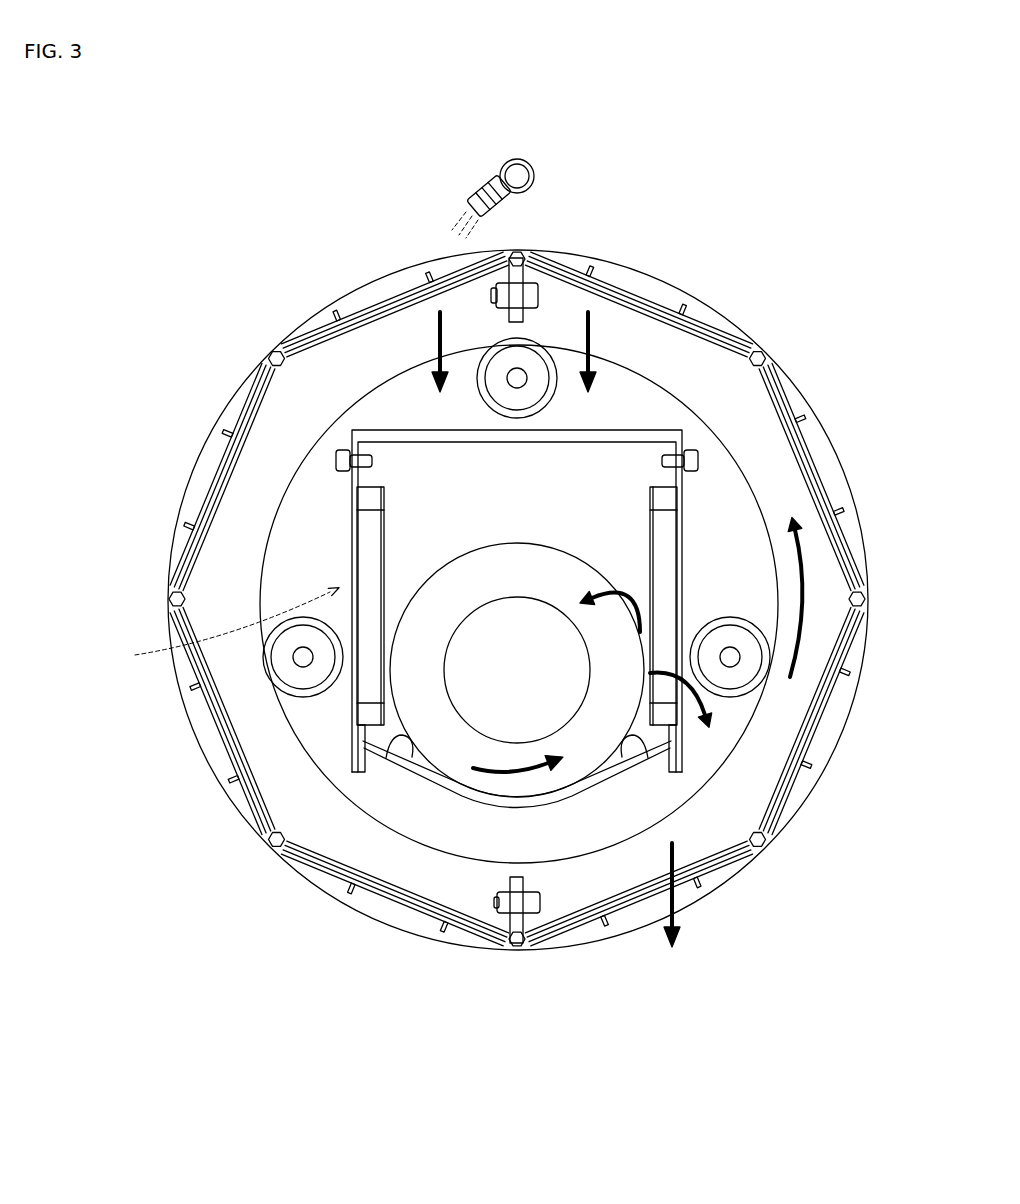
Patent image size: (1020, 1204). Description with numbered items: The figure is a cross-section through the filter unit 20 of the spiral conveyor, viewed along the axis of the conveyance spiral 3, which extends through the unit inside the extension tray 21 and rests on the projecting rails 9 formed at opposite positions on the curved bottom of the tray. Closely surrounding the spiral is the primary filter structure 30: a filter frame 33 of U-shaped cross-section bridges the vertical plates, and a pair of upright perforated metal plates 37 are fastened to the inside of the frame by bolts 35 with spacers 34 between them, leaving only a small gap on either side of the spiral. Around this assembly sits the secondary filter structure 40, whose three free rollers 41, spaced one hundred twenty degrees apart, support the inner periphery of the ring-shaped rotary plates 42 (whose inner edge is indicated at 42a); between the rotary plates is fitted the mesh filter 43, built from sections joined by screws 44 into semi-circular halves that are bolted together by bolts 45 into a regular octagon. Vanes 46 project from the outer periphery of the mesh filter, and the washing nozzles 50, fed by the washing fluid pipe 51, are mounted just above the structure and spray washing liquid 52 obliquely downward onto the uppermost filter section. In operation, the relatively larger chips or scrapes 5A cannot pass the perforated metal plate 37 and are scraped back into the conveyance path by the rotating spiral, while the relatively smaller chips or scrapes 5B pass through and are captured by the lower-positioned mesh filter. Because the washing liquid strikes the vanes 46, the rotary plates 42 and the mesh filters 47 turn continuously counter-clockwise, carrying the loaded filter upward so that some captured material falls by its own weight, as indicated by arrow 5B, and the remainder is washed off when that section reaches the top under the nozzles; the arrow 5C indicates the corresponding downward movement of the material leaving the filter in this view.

The conveyance spiral 3 is at (452, 795).
The projecting rails 9 is at (363, 742).
The filter unit 20 is at (276, 210).
The extension tray 21 is at (620, 790).
The primary filter structure 30 is at (219, 629).
The filter frame 33 is at (612, 420).
The spacers 34 is at (362, 500).
The bolts 35 is at (338, 458).
The perforated metal plate 37 is at (358, 522).
The secondary filter structure 40 is at (517, 614).
The free rollers 41 is at (490, 352).
The rotary plates 42 is at (405, 857).
The inner edge of ring 42a is at (463, 833).
The mesh filter 43 is at (405, 300).
The screws 44 is at (762, 348).
The bolts 45 is at (550, 285).
The vanes 46 is at (228, 430).
The mesh filters 47 is at (808, 612).
The washing nozzles 50 is at (478, 185).
The washing fluid pipe 51 is at (516, 159).
The washing liquid 52 is at (492, 228).
The relatively larger chips or scrapes 5A is at (628, 582).
The relatively smaller chips or scrapes 5B is at (436, 340).
The direction arrow 5C is at (690, 910).